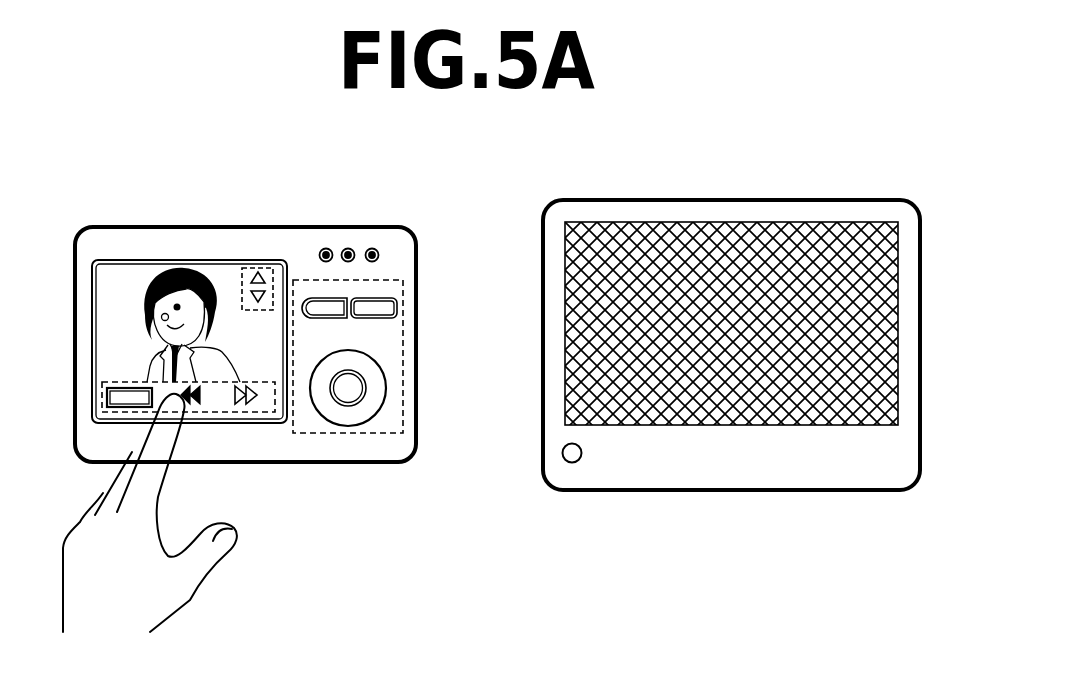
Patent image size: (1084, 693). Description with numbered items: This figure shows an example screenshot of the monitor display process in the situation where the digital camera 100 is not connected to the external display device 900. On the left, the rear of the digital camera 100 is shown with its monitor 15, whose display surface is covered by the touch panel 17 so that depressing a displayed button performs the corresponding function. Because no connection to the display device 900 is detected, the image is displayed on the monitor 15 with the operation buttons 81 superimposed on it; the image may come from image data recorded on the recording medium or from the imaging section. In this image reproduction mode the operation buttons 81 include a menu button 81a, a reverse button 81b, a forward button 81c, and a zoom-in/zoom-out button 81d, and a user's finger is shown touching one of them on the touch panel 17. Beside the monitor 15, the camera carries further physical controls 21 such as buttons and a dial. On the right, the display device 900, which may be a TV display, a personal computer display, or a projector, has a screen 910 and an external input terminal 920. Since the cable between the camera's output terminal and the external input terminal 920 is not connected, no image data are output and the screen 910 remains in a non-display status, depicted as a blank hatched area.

The digital camera 100 is at (362, 227).
The monitor 15 is at (189, 282).
The touch panel 17 is at (140, 260).
The operation unit 21 is at (403, 367).
The operation buttons 81 is at (373, 483).
The menu button 81a is at (132, 407).
The reverse button 81b is at (197, 403).
The forward button 81c is at (253, 403).
The zoom-in/zoom-out button 81d is at (258, 310).
The display device 900 is at (730, 198).
The screen 910 is at (738, 405).
The external input terminal 920 is at (572, 463).